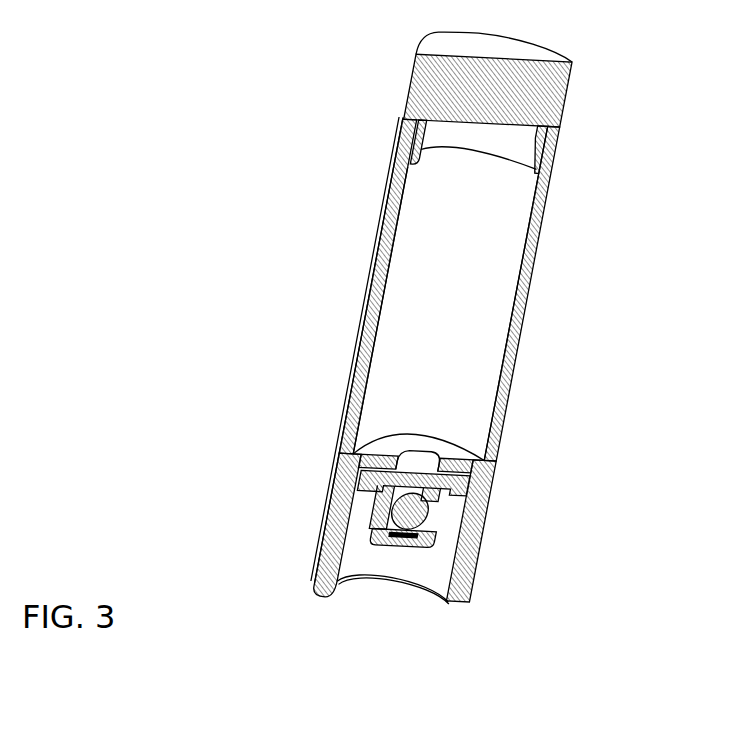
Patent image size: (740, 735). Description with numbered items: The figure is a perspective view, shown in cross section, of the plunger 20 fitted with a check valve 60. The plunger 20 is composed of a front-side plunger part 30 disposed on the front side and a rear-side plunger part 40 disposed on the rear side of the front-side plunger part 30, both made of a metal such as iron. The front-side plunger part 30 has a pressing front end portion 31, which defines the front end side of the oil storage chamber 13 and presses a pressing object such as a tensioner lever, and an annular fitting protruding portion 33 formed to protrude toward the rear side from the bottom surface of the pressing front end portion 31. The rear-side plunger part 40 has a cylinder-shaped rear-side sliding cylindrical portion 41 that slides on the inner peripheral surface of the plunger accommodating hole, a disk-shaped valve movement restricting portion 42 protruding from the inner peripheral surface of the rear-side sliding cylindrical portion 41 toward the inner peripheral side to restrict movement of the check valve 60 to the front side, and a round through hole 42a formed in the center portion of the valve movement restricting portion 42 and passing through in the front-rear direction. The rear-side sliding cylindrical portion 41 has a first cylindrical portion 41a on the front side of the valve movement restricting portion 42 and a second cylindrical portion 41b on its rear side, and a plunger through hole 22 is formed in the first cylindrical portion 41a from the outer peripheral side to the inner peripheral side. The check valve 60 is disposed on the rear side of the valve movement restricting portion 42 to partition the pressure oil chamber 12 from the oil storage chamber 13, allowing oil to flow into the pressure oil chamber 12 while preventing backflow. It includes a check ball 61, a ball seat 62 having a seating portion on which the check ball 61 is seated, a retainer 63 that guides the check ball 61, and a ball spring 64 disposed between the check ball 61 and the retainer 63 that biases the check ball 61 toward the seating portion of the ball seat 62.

The plunger 20 is at (231, 84).
The front-side plunger part 30 is at (406, 79).
The pressing front end portion 31 is at (525, 89).
The annular fitting protruding portion 33 is at (548, 148).
The rear-side plunger part 40 is at (388, 164).
The plunger through hole 22 is at (378, 260).
The rear-side sliding cylindrical portion 41 is at (630, 410).
The first cylindrical portion 41a is at (510, 395).
The second cylindrical portion 41b is at (486, 518).
The valve movement restricting portion 42 is at (352, 452).
The round through hole 42a is at (417, 457).
The oil storage chamber 13 is at (458, 298).
The pressure oil chamber 12 is at (412, 569).
The check valve 60 is at (208, 478).
The check ball 61 is at (400, 510).
The ball seat 62 is at (356, 480).
The retainer 63 is at (385, 538).
The ball spring 64 is at (383, 530).